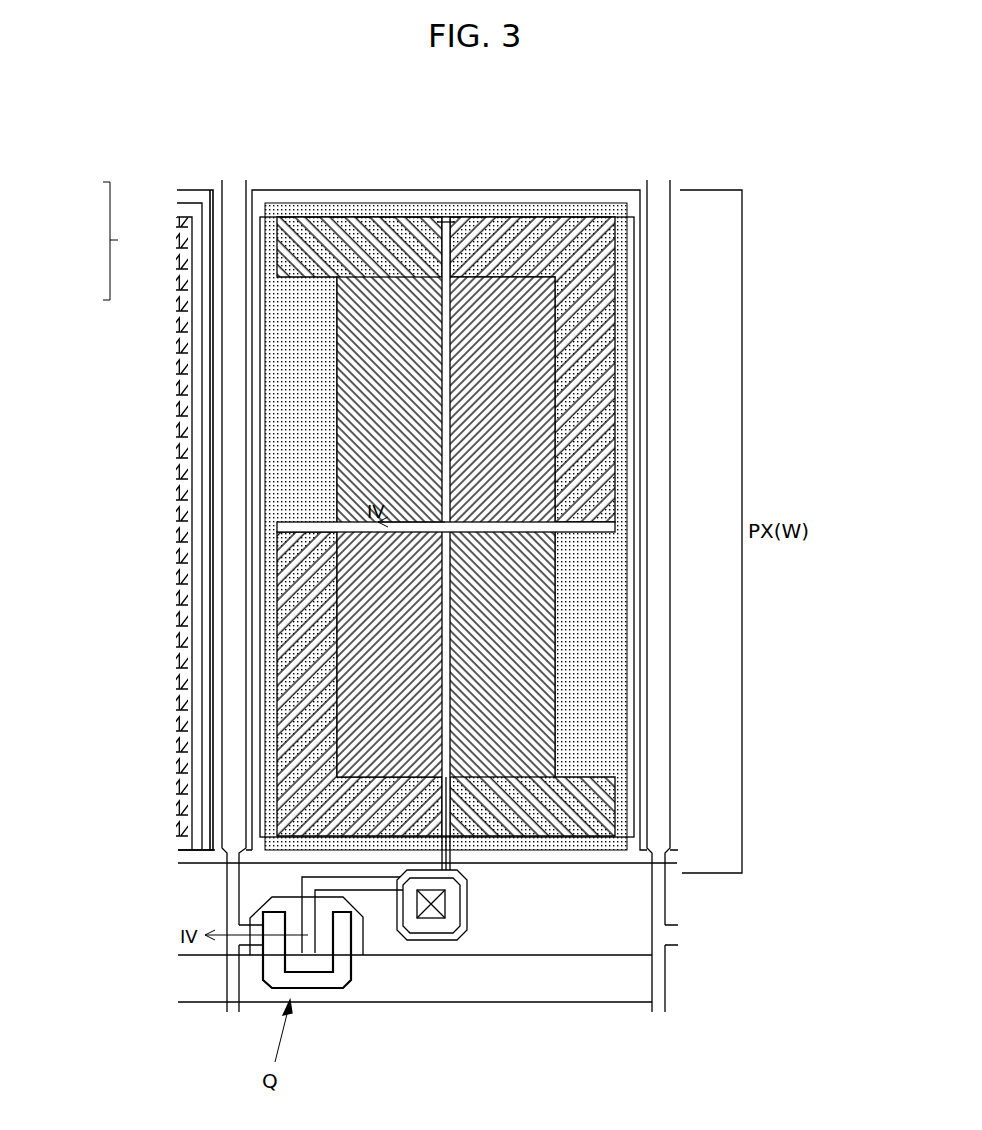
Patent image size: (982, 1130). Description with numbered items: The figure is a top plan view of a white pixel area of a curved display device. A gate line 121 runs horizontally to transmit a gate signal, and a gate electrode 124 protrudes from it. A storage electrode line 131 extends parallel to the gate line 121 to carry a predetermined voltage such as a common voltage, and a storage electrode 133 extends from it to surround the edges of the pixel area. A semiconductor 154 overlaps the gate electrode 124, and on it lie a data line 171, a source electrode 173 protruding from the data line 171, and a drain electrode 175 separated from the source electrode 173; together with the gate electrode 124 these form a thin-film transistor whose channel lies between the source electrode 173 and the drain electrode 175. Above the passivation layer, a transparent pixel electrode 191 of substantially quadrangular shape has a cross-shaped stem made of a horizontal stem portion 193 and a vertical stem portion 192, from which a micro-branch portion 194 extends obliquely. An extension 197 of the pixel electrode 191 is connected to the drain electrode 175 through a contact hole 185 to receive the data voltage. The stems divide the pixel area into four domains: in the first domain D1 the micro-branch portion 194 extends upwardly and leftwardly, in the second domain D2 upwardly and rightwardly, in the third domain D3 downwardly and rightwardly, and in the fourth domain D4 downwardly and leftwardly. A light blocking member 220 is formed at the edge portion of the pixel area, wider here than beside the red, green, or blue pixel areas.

The gate line 121 is at (200, 980).
The gate electrode 124 is at (262, 905).
The storage electrode line 131 is at (285, 858).
The storage electrode 133 is at (250, 622).
The semiconductor 154 is at (345, 898).
The data line 171 is at (232, 575).
The source electrode 173 is at (280, 979).
The drain electrode 175 is at (305, 880).
The contact hole 185 is at (433, 918).
The pixel electrode 191 is at (438, 494).
The vertical stem portion 192 is at (445, 360).
The horizontal stem portion 193 is at (310, 494).
The micro-branch portion 194 is at (438, 526).
The extension 197 is at (302, 671).
The light blocking member 220 is at (640, 343).
The first domain D1 is at (366, 315).
The second domain D2 is at (527, 317).
The third domain D3 is at (540, 748).
The fourth domain D4 is at (290, 742).